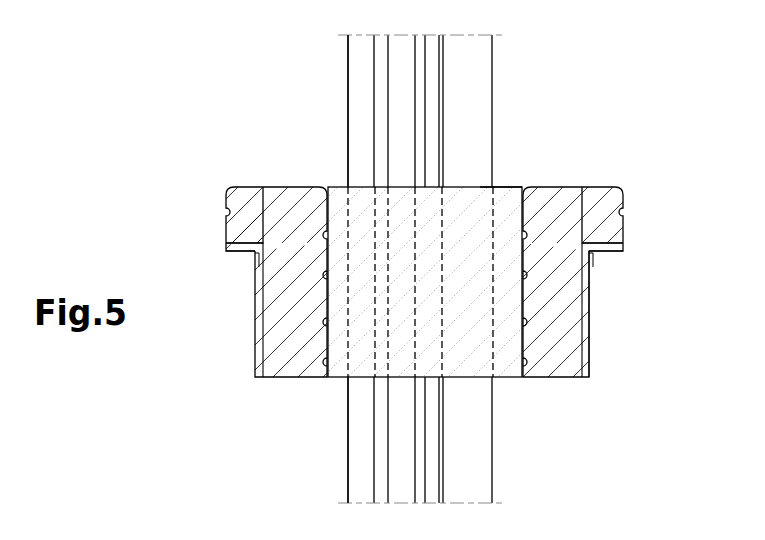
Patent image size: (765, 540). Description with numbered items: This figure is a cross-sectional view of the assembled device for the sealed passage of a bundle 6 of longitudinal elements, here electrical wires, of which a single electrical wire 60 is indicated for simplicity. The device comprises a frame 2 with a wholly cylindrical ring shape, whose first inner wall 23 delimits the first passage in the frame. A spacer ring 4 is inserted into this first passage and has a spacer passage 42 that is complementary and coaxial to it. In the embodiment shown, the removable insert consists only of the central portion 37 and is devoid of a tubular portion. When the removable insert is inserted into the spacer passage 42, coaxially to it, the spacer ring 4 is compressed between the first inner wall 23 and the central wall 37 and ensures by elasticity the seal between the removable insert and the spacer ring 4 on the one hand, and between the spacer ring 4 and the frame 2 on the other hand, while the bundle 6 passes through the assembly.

The frame 2 is at (609, 328).
The spacer ring 4 is at (642, 229).
The bundle of longitudinal elements 6 is at (320, 130).
The first inner wall 23 is at (582, 360).
The central portion 37 is at (512, 186).
The spacer passage 42 is at (503, 168).
The electrical wire 60 is at (348, 88).